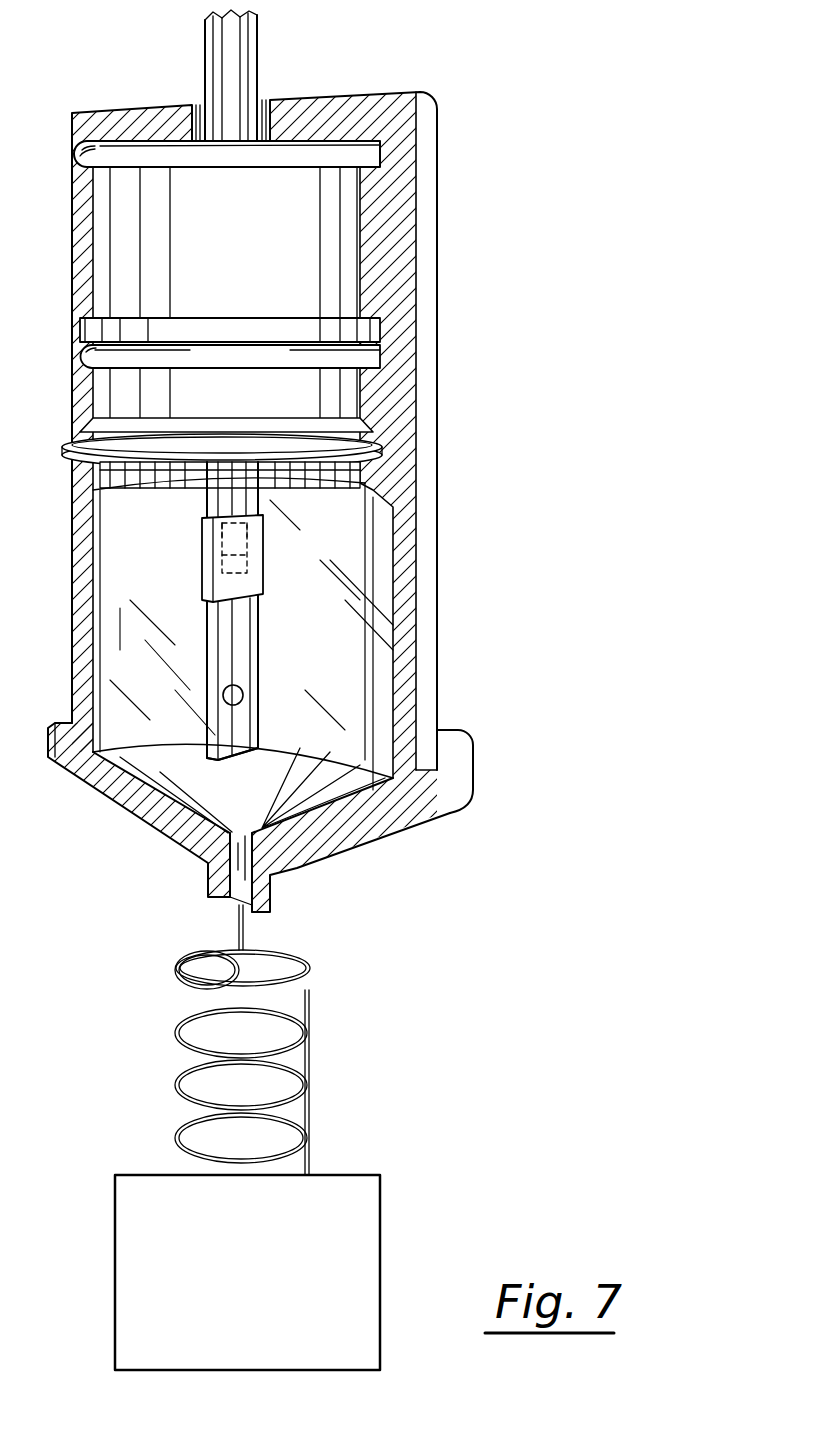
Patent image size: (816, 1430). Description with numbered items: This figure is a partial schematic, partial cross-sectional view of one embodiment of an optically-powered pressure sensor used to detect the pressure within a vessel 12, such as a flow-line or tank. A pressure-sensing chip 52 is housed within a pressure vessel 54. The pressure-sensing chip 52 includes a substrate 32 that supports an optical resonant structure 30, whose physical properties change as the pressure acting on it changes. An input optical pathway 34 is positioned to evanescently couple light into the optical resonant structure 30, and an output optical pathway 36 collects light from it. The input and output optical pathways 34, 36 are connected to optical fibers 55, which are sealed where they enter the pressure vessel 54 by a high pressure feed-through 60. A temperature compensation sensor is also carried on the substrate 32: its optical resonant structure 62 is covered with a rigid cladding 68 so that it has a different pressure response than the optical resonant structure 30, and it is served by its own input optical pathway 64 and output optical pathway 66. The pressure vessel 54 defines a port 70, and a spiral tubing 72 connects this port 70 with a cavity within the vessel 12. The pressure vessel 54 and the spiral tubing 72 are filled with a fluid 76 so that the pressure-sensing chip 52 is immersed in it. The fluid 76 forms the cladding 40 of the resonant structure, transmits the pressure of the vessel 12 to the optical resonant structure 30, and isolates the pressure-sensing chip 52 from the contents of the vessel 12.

The vessel 12 is at (380, 1217).
The optical resonant structure 30 is at (228, 705).
The substrate 32 is at (232, 760).
The input optical pathway 34 is at (250, 640).
The output optical pathway 36 is at (212, 630).
The cladding 40 is at (355, 695).
The pressure-sensing chip 52 is at (225, 560).
The pressure vessel 54 is at (408, 538).
The optical fibers 55 is at (205, 52).
The high pressure feed-through 60 is at (330, 262).
The optical resonant structure 62 is at (265, 580).
The input optical pathway 64 is at (262, 531).
The output optical pathway 66 is at (200, 537).
The rigid cladding 68 is at (263, 566).
The port 70 is at (240, 905).
The spiral tubing 72 is at (312, 1000).
The fluid 76 is at (110, 690).